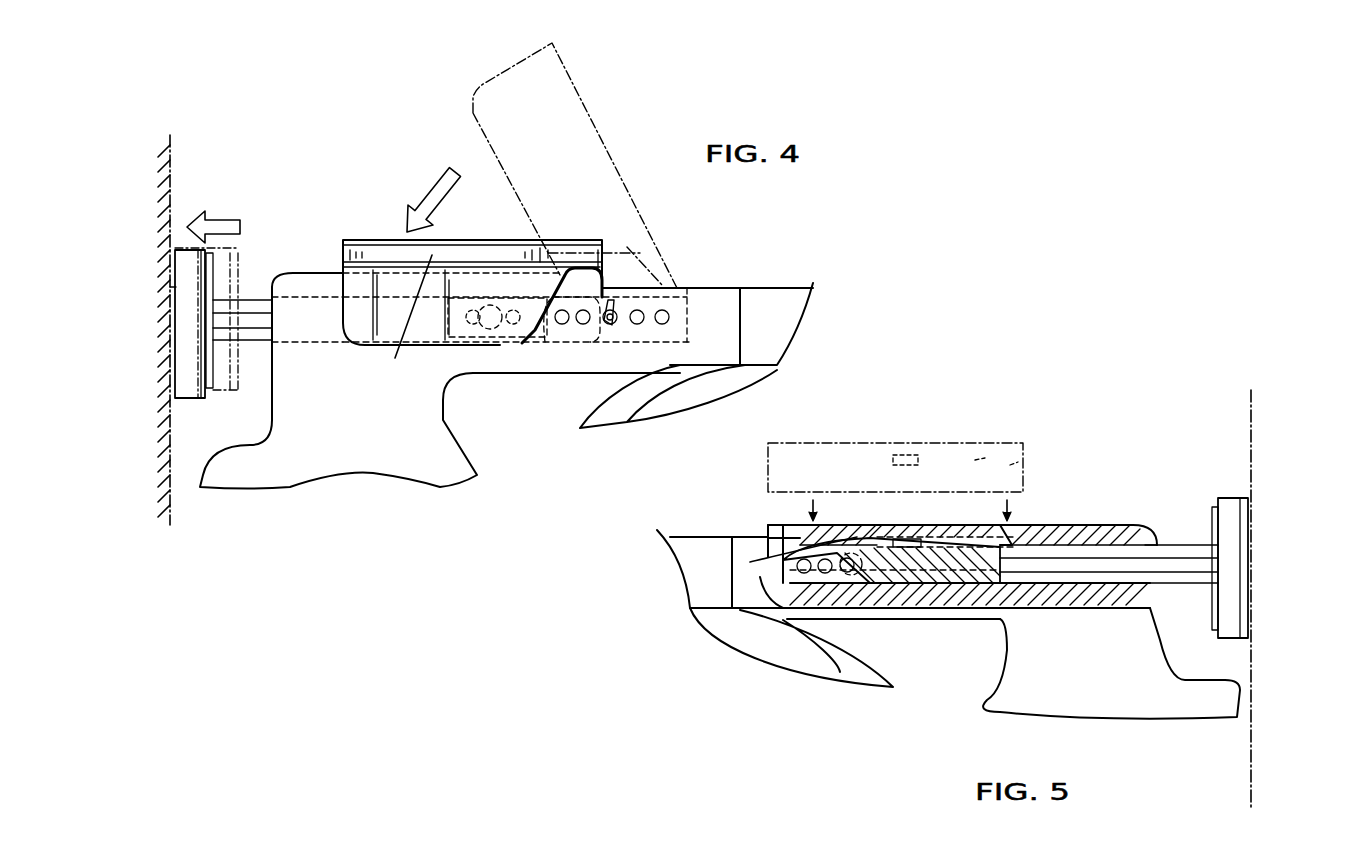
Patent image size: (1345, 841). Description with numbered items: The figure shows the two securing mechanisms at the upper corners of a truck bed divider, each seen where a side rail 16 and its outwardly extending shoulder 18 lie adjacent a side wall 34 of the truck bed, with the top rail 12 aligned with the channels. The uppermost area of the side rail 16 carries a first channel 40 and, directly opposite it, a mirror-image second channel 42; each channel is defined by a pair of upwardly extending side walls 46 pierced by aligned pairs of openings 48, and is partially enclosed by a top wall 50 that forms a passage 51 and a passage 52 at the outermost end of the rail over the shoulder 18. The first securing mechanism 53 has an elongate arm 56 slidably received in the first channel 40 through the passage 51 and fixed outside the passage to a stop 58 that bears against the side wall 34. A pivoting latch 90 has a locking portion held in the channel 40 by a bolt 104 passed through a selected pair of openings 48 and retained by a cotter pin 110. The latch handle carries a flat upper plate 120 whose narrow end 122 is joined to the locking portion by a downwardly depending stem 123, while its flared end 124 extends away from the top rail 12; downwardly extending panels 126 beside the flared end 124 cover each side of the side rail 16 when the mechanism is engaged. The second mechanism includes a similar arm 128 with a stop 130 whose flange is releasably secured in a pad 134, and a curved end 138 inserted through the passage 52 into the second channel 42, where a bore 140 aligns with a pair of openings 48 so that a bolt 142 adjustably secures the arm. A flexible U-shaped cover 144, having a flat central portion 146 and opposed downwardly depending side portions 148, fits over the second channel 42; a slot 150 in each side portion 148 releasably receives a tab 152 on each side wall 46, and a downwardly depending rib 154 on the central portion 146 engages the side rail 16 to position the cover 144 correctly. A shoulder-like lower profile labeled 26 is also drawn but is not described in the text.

In FIG. 4, the top rail 12 is at (772, 300).
In FIG. 5, the top rail 12 is at (703, 550).
In FIG. 4, the side rail 16 is at (725, 300).
In FIG. 4, the shoulder 18 is at (222, 475).
In FIG. 5, the shoulder 18 is at (1215, 705).
In FIG. 4, the guide wing 26 is at (760, 395).
In FIG. 5, the guide wing 26 is at (755, 643).
In FIG. 4, the side wall 34 is at (170, 172).
In FIG. 5, the side wall 34 is at (1248, 422).
In FIG. 4, the first channel 40 is at (678, 290).
In FIG. 5, the second channel 42 is at (845, 548).
In FIG. 4, the side walls 46 is at (545, 340).
In FIG. 4, the openings 48 is at (637, 324).
In FIG. 5, the openings 48 is at (847, 565).
In FIG. 4, the top wall 50 is at (300, 273).
In FIG. 5, the top wall 50 is at (1077, 525).
In FIG. 4, the passage 51 is at (170, 287).
In FIG. 5, the passage 52 is at (1157, 545).
In FIG. 4, the first securing mechanism 53 is at (390, 199).
In FIG. 4, the elongate arm 56 is at (252, 298).
In FIG. 4, the stop 58 is at (193, 395).
In FIG. 4, the pivoting latch 90 is at (352, 226).
In FIG. 4, the bolt 104 is at (600, 320).
In FIG. 4, the cotter pin 110 is at (610, 318).
In FIG. 4, the upper plate 120 is at (465, 233).
In FIG. 4, the narrow end 122 is at (588, 255).
In FIG. 4, the stem 123 is at (600, 265).
In FIG. 4, the flared end 124 is at (401, 320).
In FIG. 4, the panels 126 is at (360, 335).
In FIG. 5, the arm 128 is at (1182, 552).
In FIG. 5, the stop 130 is at (1233, 508).
In FIG. 5, the pad 134 is at (1250, 525).
In FIG. 5, the curved end 138 is at (840, 567).
In FIG. 5, the bore 140 is at (838, 578).
In FIG. 5, the bolt 142 is at (903, 600).
In FIG. 5, the cover 144 is at (908, 438).
In FIG. 5, the central portion 146 is at (977, 460).
In FIG. 5, the side portions 148 is at (1010, 465).
In FIG. 5, the slot 150 is at (893, 460).
In FIG. 5, the tab 152 is at (907, 542).
In FIG. 5, the rib 154 is at (805, 537).